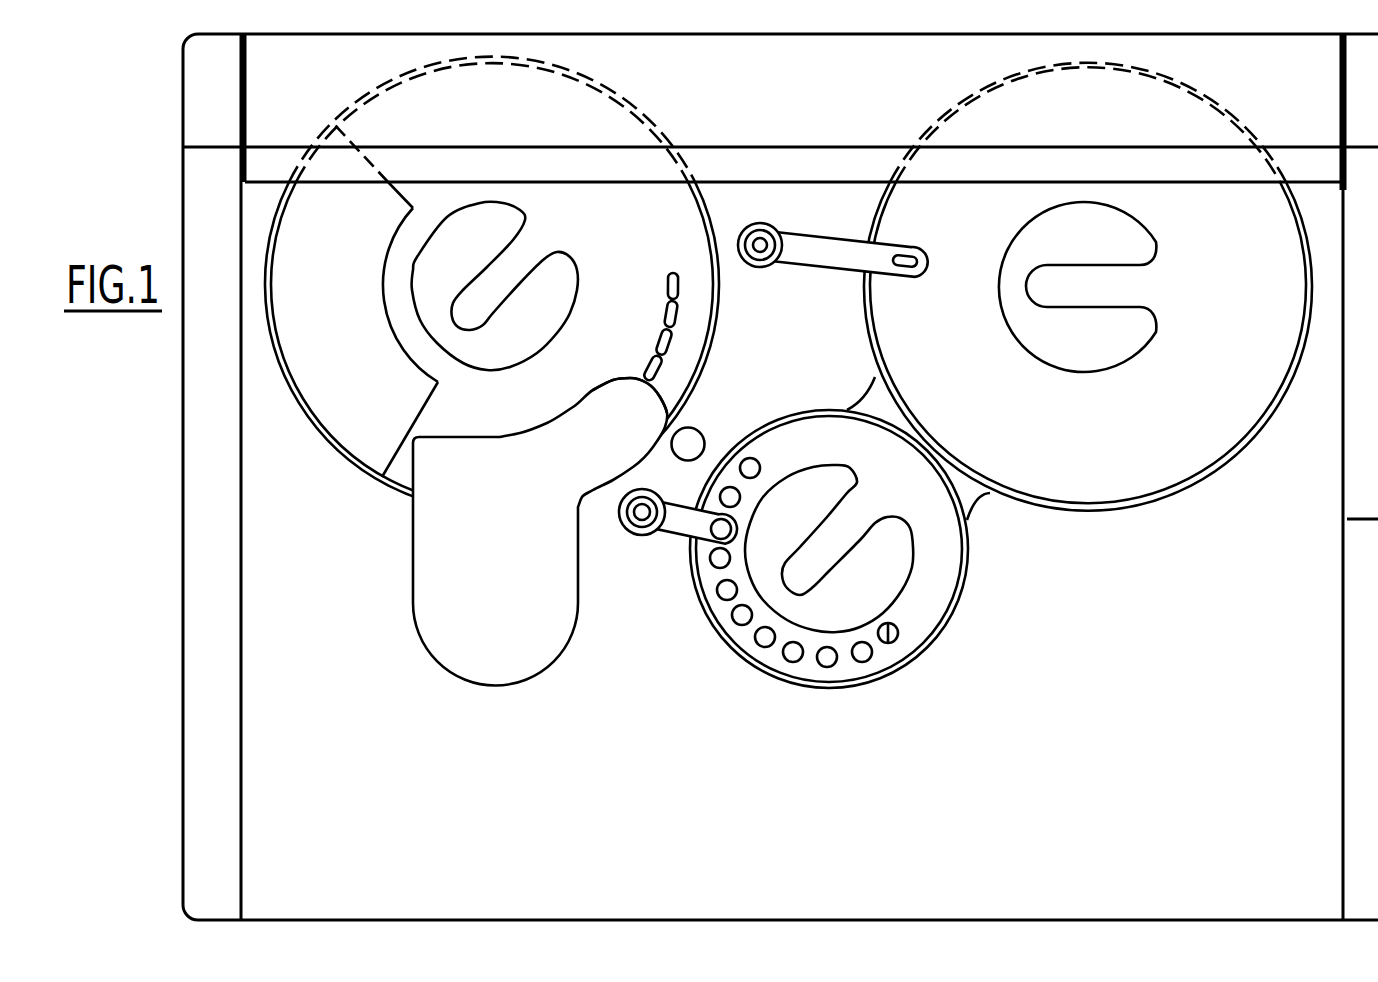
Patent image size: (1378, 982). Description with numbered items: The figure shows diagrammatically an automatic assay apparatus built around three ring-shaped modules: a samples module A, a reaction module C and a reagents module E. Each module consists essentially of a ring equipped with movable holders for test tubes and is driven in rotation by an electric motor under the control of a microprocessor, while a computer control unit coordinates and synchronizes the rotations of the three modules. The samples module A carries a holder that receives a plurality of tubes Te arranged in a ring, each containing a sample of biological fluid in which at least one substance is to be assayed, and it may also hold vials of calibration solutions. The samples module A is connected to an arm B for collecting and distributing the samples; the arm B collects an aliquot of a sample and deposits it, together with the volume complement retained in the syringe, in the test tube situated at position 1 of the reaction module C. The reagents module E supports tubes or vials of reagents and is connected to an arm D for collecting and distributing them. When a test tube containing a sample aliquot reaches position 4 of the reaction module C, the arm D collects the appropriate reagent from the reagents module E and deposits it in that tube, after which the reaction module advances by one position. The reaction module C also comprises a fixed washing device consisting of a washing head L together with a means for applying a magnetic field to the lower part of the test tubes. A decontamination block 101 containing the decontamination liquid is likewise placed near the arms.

The reaction module C is at (713, 370).
The reagents module E is at (1180, 496).
The samples module A is at (812, 686).
The tubes Te is at (758, 646).
The washing head L is at (421, 597).
The arm B is at (672, 528).
The arm D is at (828, 256).
The position 4 is at (689, 286).
The position 1 is at (665, 384).
The decontamination block 101 is at (707, 442).